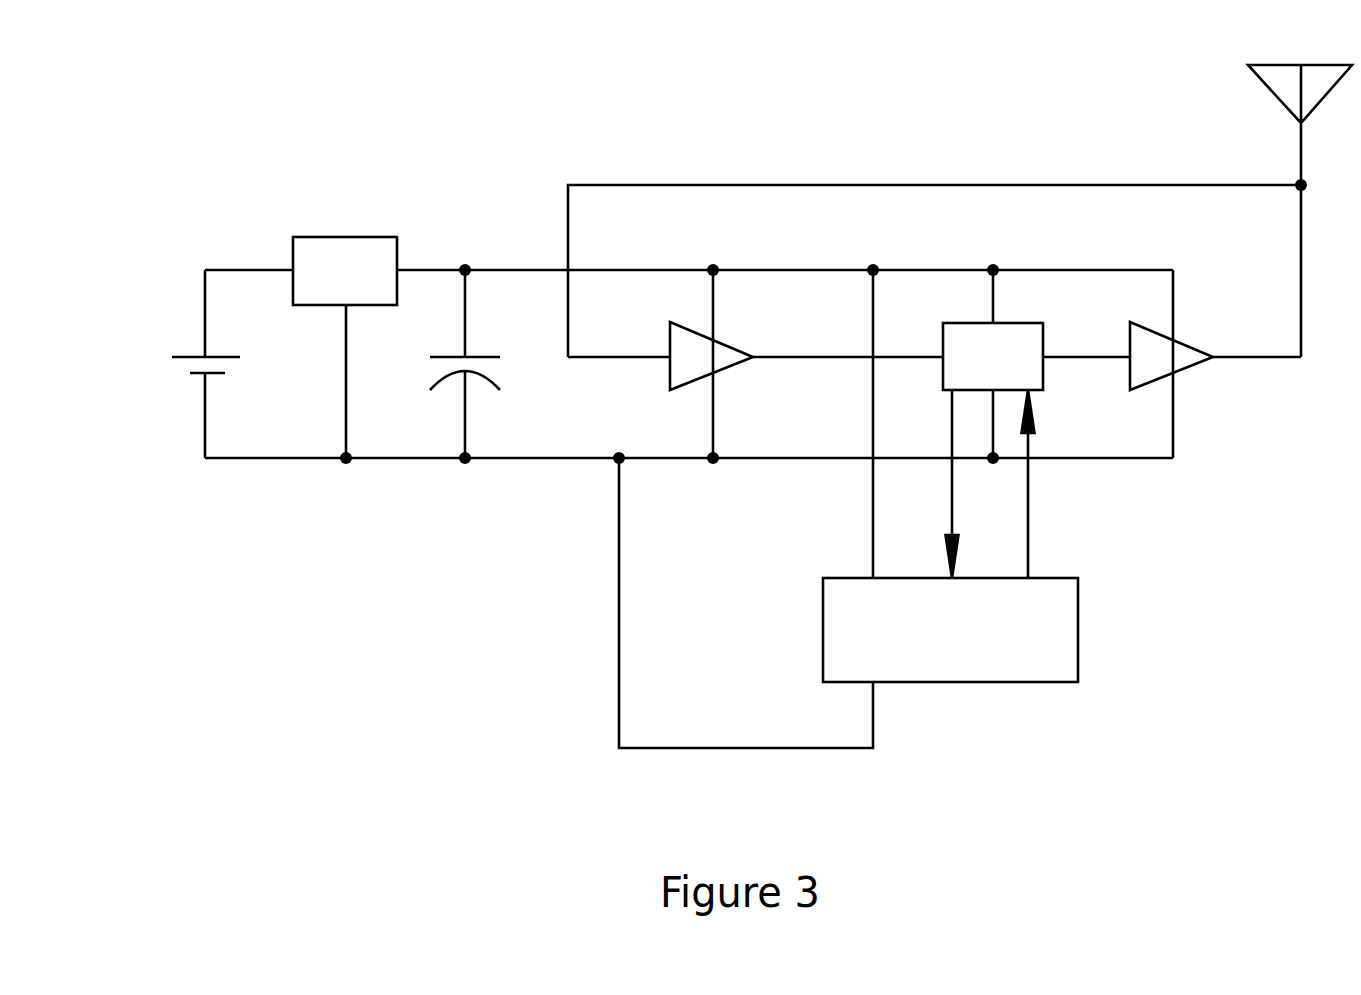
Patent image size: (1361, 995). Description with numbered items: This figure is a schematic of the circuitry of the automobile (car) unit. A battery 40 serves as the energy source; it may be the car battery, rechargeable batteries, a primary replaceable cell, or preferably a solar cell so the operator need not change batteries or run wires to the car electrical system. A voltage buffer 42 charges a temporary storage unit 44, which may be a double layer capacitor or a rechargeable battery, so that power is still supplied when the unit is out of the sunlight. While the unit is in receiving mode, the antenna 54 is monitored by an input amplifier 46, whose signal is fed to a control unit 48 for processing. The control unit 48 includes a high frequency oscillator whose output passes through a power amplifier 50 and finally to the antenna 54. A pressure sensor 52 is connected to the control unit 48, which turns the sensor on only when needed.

The battery 40 is at (196, 364).
The voltage buffer 42 is at (345, 326).
The temporary storage unit 44 is at (455, 364).
The input amplifier 46 is at (718, 364).
The control unit 48 is at (993, 421).
The power amplifier 50 is at (1215, 346).
The pressure sensor 52 is at (845, 506).
The antenna 54 is at (1277, 208).